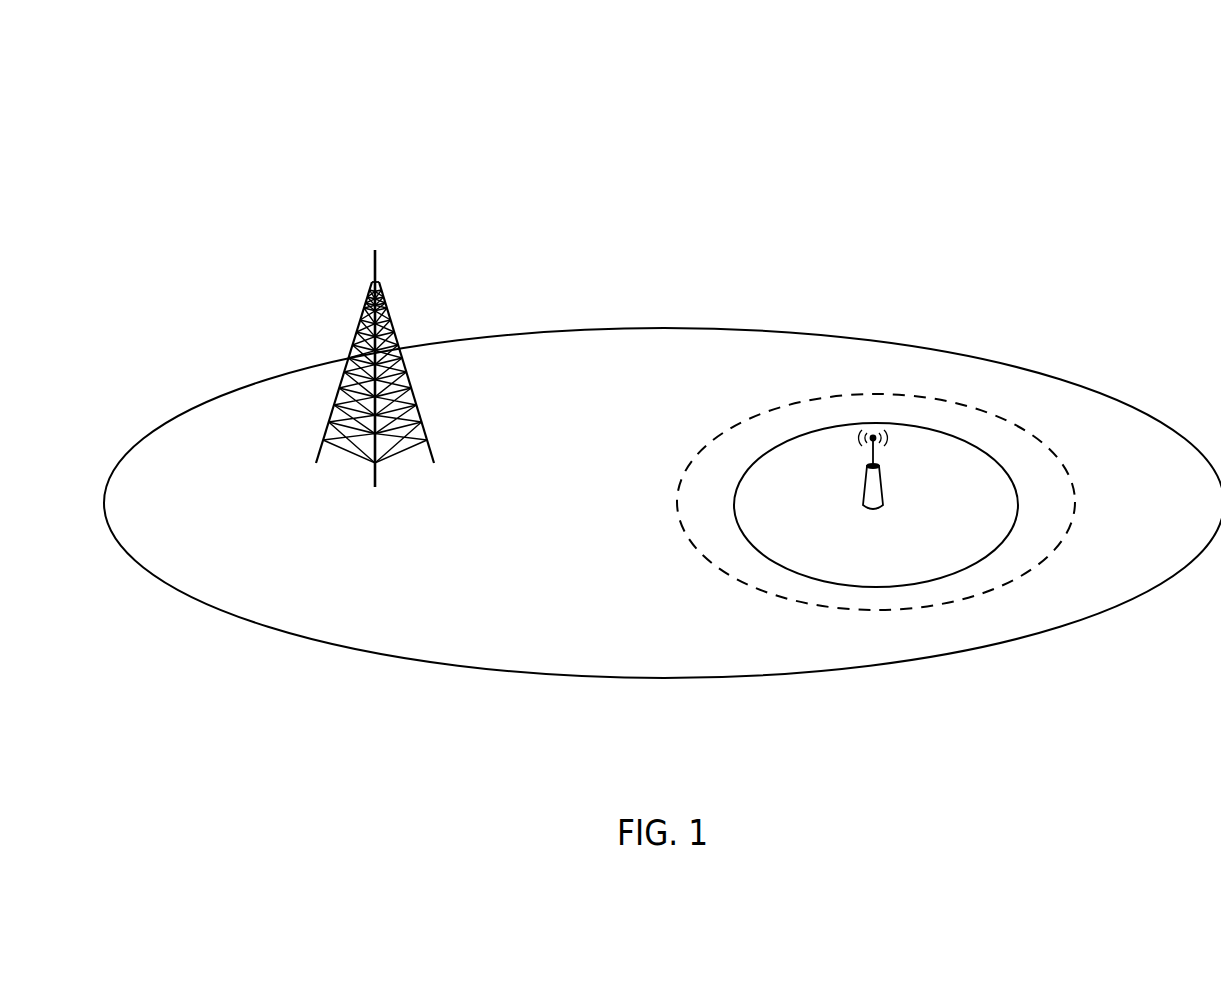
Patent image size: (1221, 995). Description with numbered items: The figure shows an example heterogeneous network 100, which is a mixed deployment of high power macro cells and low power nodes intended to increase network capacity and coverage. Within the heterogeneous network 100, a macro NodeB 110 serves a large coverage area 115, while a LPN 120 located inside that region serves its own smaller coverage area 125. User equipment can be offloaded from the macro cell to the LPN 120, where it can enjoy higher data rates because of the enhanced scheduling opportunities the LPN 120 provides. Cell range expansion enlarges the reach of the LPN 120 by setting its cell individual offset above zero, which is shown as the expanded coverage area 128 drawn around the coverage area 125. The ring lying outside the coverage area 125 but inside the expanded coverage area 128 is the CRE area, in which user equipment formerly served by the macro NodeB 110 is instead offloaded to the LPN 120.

The heterogeneous network (Hetnet) 100 is at (290, 146).
The macro NodeB 110 is at (358, 327).
The coverage area 115 is at (475, 335).
The LPN 120 is at (885, 492).
The coverage area 125 is at (917, 420).
The expanded coverage area 128 is at (908, 612).